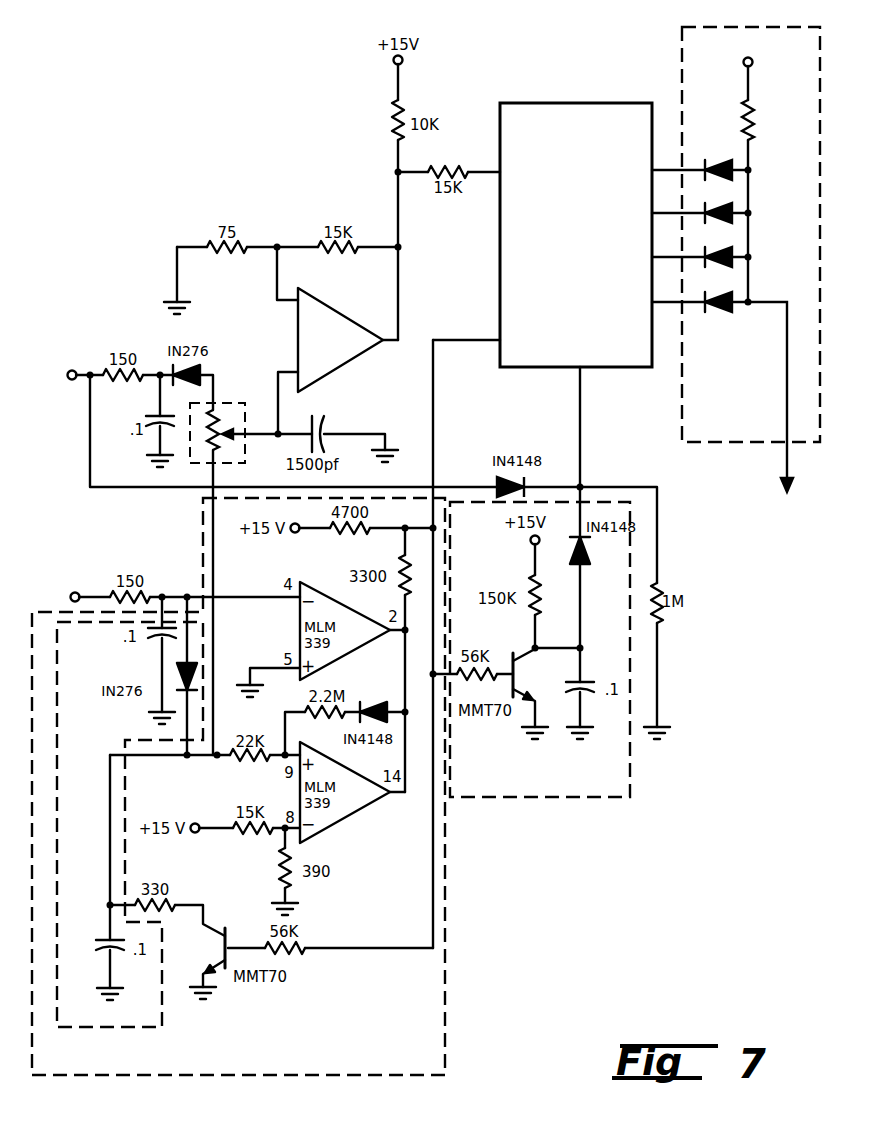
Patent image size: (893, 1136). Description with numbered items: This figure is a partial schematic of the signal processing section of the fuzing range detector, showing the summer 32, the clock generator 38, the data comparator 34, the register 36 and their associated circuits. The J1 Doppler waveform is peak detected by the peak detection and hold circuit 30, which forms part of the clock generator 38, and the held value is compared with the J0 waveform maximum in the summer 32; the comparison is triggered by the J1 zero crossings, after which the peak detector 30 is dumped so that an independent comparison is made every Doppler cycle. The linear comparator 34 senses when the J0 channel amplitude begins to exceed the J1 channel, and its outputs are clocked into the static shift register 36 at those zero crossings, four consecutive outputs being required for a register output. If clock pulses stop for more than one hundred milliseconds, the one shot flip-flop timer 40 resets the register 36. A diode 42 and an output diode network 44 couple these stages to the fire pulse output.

The peak detection and hold circuit 30 is at (144, 1027).
The summer 32 is at (229, 403).
The linear comparator 34 is at (351, 322).
The static shift register 36 is at (530, 103).
The clock generator 38 is at (255, 1076).
The one shot flip-flop timer 40 is at (584, 797).
The diode (IN4148) 42 is at (455, 485).
The output diode network 44 is at (722, 27).